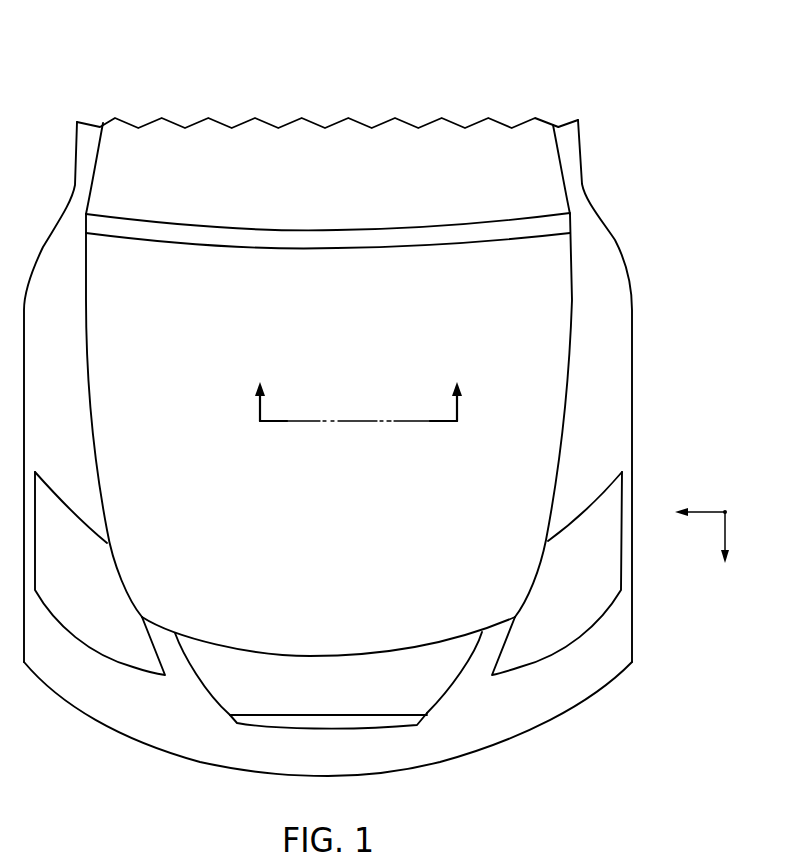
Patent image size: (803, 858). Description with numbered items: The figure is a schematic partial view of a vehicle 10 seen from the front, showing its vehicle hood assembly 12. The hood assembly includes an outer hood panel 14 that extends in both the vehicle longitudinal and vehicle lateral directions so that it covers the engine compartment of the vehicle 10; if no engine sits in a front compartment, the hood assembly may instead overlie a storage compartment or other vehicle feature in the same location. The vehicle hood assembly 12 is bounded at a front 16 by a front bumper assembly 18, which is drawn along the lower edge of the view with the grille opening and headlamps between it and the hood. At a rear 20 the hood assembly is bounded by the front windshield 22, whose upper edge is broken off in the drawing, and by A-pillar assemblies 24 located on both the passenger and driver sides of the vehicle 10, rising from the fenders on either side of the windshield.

The vehicle 10 is at (637, 75).
The vehicle hood assembly 12 is at (596, 307).
The outer hood panel 14 is at (550, 413).
The front 16 is at (327, 656).
The front bumper assembly 18 is at (125, 759).
The rear 20 is at (192, 243).
The front windshield 22 is at (302, 141).
The A-pillar assemblies 24 is at (80, 187).